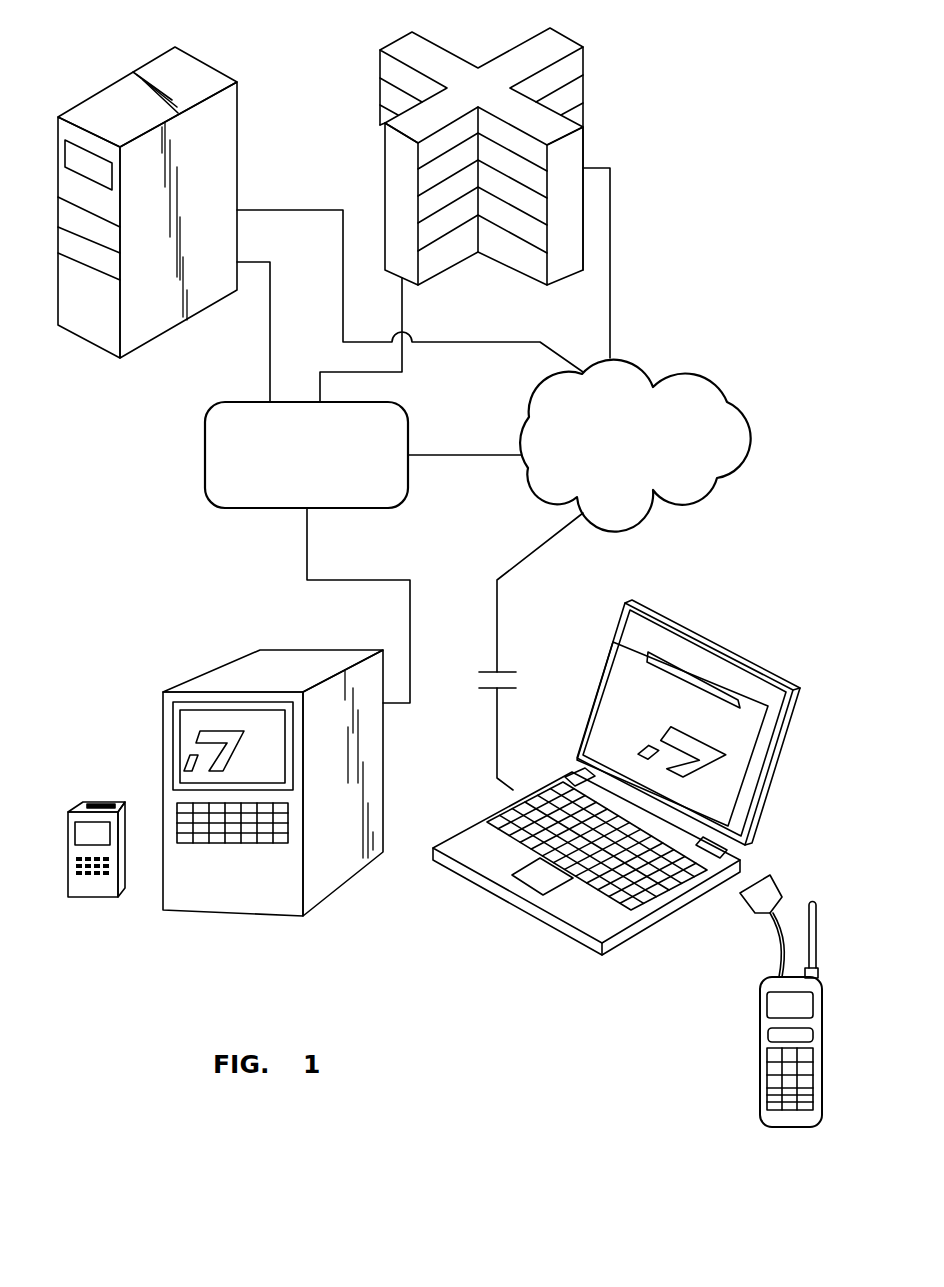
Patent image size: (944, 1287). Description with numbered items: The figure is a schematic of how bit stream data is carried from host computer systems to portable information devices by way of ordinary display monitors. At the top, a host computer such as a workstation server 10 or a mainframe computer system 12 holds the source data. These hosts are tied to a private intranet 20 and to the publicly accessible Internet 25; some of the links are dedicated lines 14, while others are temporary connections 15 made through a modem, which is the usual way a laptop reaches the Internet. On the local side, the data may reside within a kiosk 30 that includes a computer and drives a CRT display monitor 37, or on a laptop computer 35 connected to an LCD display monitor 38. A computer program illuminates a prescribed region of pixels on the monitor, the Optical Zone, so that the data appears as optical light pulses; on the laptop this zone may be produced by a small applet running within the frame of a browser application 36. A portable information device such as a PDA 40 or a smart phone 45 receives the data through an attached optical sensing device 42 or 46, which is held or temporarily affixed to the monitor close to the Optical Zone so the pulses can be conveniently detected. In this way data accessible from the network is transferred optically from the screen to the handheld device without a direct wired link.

The workstation server 10 is at (150, 50).
The mainframe computer system 12 is at (378, 43).
The dedicated lines 14 is at (268, 341).
The temporary connections 15 is at (289, 209).
The private intranet 20 is at (198, 432).
The Internet 25 is at (707, 380).
The kiosk 30 is at (241, 766).
The laptop computer 35 is at (633, 781).
The browser application 36 is at (792, 742).
The CRT display monitor 37 is at (293, 748).
The LCD display monitor 38 is at (610, 643).
The PDA 40 is at (91, 868).
The optical sensing device 42 is at (102, 802).
The smart phone 45 is at (757, 1102).
The optical sensing device 46 is at (738, 910).